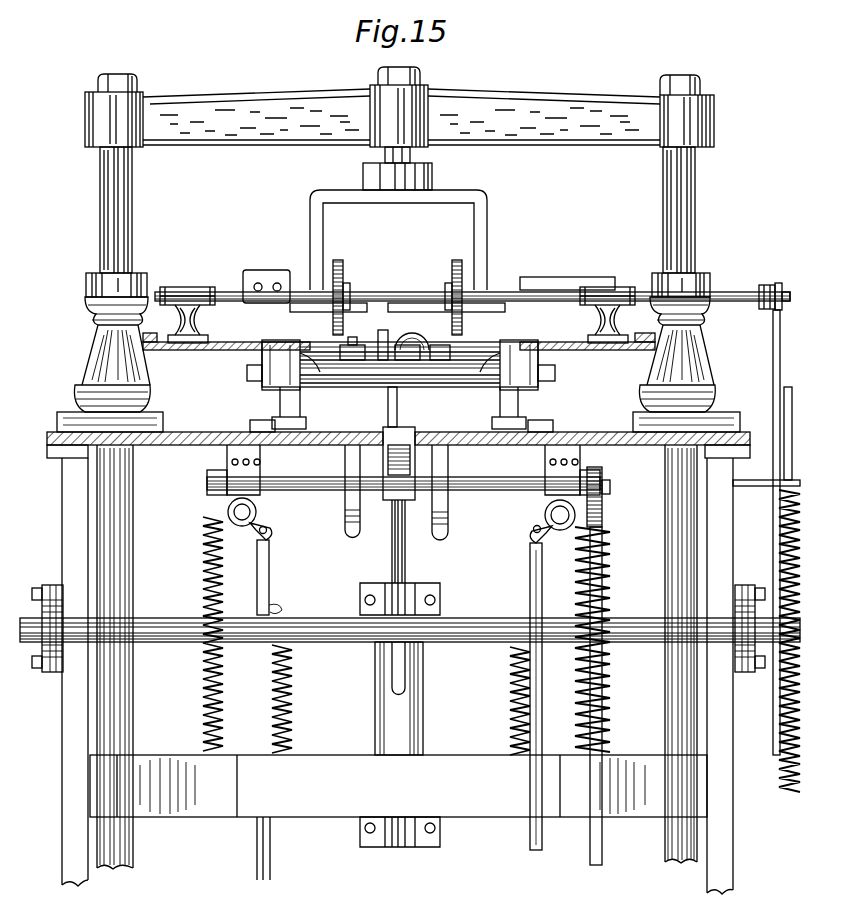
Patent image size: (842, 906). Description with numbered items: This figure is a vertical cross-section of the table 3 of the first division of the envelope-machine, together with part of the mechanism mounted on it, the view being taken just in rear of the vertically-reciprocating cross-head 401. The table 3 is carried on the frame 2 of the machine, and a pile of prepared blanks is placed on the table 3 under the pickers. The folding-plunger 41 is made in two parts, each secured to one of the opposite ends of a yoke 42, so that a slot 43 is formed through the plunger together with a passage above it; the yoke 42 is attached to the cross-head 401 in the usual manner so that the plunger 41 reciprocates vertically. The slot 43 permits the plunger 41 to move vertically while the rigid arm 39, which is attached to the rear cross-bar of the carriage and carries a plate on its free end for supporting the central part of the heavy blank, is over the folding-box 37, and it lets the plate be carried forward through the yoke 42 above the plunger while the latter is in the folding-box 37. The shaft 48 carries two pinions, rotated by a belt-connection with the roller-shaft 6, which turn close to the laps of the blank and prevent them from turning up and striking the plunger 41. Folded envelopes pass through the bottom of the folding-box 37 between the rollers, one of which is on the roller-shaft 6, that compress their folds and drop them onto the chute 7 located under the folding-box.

The vertically-reciprocating cross-head 401 is at (700, 123).
The yoke 42 is at (486, 206).
The slot 43 is at (385, 305).
The folding-plunger 41 is at (358, 320).
The rigid arm 39 is at (388, 345).
The shaft 48 is at (760, 515).
The folding-box 37 is at (343, 430).
The table 3 is at (586, 432).
The frame 2 is at (398, 669).
The chute 7 is at (405, 496).
The roller-shaft 6 is at (152, 630).